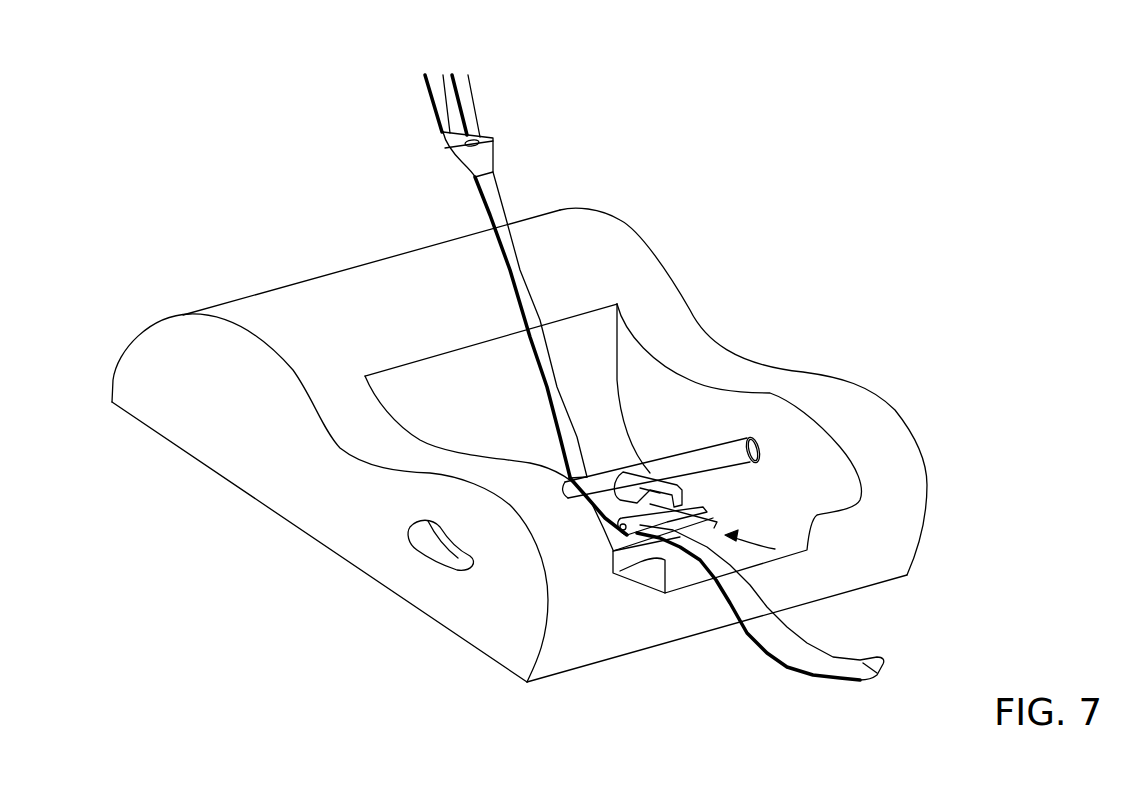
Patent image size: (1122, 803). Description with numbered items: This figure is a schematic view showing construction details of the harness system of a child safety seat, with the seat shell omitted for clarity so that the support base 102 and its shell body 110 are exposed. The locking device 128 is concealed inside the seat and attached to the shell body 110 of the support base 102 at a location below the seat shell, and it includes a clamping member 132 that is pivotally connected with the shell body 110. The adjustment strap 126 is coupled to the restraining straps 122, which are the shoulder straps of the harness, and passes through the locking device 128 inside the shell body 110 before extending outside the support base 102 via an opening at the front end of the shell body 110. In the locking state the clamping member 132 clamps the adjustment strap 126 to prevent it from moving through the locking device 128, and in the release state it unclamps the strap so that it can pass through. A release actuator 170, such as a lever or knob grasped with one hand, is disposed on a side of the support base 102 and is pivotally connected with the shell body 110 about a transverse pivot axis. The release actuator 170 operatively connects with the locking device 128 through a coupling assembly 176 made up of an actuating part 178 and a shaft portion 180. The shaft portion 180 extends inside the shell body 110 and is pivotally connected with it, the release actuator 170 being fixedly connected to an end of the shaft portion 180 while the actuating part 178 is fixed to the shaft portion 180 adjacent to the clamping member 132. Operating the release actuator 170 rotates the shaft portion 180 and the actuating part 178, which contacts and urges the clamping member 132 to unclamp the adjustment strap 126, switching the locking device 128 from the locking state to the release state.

The support base 102 is at (213, 477).
The shell body 110 is at (323, 307).
The restraining straps 122 is at (442, 107).
The adjustment strap 126 is at (783, 647).
The locking device 128 is at (807, 548).
The clamping member 132 is at (700, 487).
The release actuator 170 is at (430, 556).
The coupling assembly 176 is at (808, 245).
The actuating part 178 is at (660, 460).
The shaft portion 180 is at (725, 443).